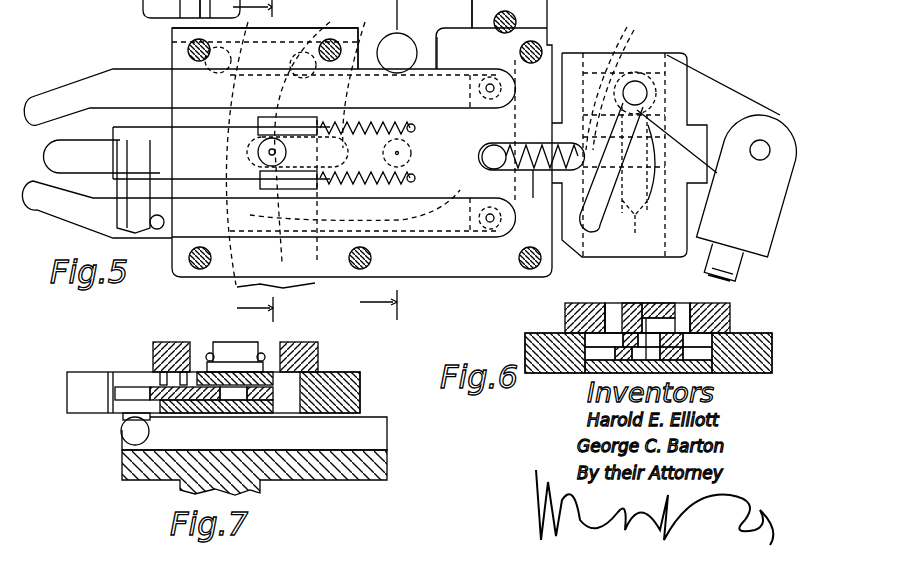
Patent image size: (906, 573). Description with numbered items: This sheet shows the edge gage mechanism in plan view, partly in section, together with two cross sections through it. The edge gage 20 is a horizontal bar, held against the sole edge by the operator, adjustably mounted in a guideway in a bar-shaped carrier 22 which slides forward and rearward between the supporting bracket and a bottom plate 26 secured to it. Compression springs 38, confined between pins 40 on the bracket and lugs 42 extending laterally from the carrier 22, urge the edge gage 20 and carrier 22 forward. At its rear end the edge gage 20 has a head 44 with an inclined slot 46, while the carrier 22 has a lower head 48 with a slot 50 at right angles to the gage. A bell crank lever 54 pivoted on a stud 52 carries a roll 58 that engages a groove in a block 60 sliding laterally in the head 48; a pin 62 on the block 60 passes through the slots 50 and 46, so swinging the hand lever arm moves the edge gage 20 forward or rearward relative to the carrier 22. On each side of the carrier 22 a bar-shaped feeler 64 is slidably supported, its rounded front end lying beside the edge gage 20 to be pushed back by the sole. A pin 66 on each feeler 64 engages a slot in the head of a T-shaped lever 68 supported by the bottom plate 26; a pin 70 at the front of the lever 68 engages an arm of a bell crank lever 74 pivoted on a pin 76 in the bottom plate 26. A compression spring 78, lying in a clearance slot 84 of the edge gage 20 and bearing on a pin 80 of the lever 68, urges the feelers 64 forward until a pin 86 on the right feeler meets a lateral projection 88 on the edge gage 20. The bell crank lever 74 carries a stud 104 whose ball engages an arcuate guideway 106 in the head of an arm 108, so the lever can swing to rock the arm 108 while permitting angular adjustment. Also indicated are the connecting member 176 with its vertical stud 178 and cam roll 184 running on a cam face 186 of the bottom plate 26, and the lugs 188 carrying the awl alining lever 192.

In FIG. 5, the edge gage 20 is at (56, 138).
In FIG. 7, the edge gage 20 is at (237, 346).
In FIG. 6, the edge gage 20 is at (625, 281).
In FIG. 5, the carrier 22 is at (118, 160).
In FIG. 6, the carrier 22 is at (670, 302).
In FIG. 5, the bottom plate 26 is at (450, 274).
In FIG. 7, the bottom plate 26 is at (360, 388).
In FIG. 6, the bottom plate 26 is at (772, 351).
In FIG. 5, the compression springs 38 is at (384, 172).
In FIG. 7, the compression springs 38 is at (208, 354).
In FIG. 5, the pins 40 is at (413, 177).
In FIG. 5, the lugs 42 is at (292, 120).
In FIG. 6, the lugs 42 is at (610, 303).
In FIG. 5, the head 44 is at (560, 72).
In FIG. 5, the inclined slot 46 is at (611, 179).
In FIG. 5, the head 48 is at (682, 56).
In FIG. 5, the slot 50 is at (638, 181).
In FIG. 5, the stud 52 is at (764, 146).
In FIG. 5, the bell crank lever 54 is at (757, 247).
In FIG. 5, the roll 58 is at (660, 130).
In FIG. 5, the block 60 is at (605, 60).
In FIG. 5, the pin 62 is at (637, 96).
In FIG. 5, the feelers 64 is at (34, 100).
In FIG. 7, the feelers 64 is at (153, 353).
In FIG. 6, the feelers 64 is at (565, 318).
In FIG. 5, the pin 66 is at (494, 88).
In FIG. 5, the T-shaped lever 68 is at (438, 222).
In FIG. 6, the T-shaped lever 68 is at (672, 343).
In FIG. 6, the pin 70 is at (646, 318).
In FIG. 5, the bell crank lever 74 is at (418, 58).
In FIG. 7, the bell crank lever 74 is at (225, 388).
In FIG. 6, the bell crank lever 74 is at (655, 348).
In FIG. 7, the pin 76 is at (235, 405).
In FIG. 5, the compression spring 78 is at (516, 185).
In FIG. 5, the pin 80 is at (494, 155).
In FIG. 5, the clearance slot 84 is at (486, 160).
In FIG. 5, the pin 86 is at (165, 221).
In FIG. 5, the lateral projection 88 is at (133, 224).
In FIG. 7, the stud 104 is at (128, 433).
In FIG. 7, the arcuate guideway 106 is at (362, 449).
In FIG. 7, the arm 108 is at (255, 484).
In FIG. 5, the connecting member 176 is at (237, 285).
In FIG. 5, the vertical stud 178 is at (345, 40).
In FIG. 5, the cam roll 184 is at (278, 45).
In FIG. 5, the cam face 186 is at (172, 50).
In FIG. 5, the lugs 188 is at (143, 10).
In FIG. 5, the awl alining lever 192 is at (172, 20).